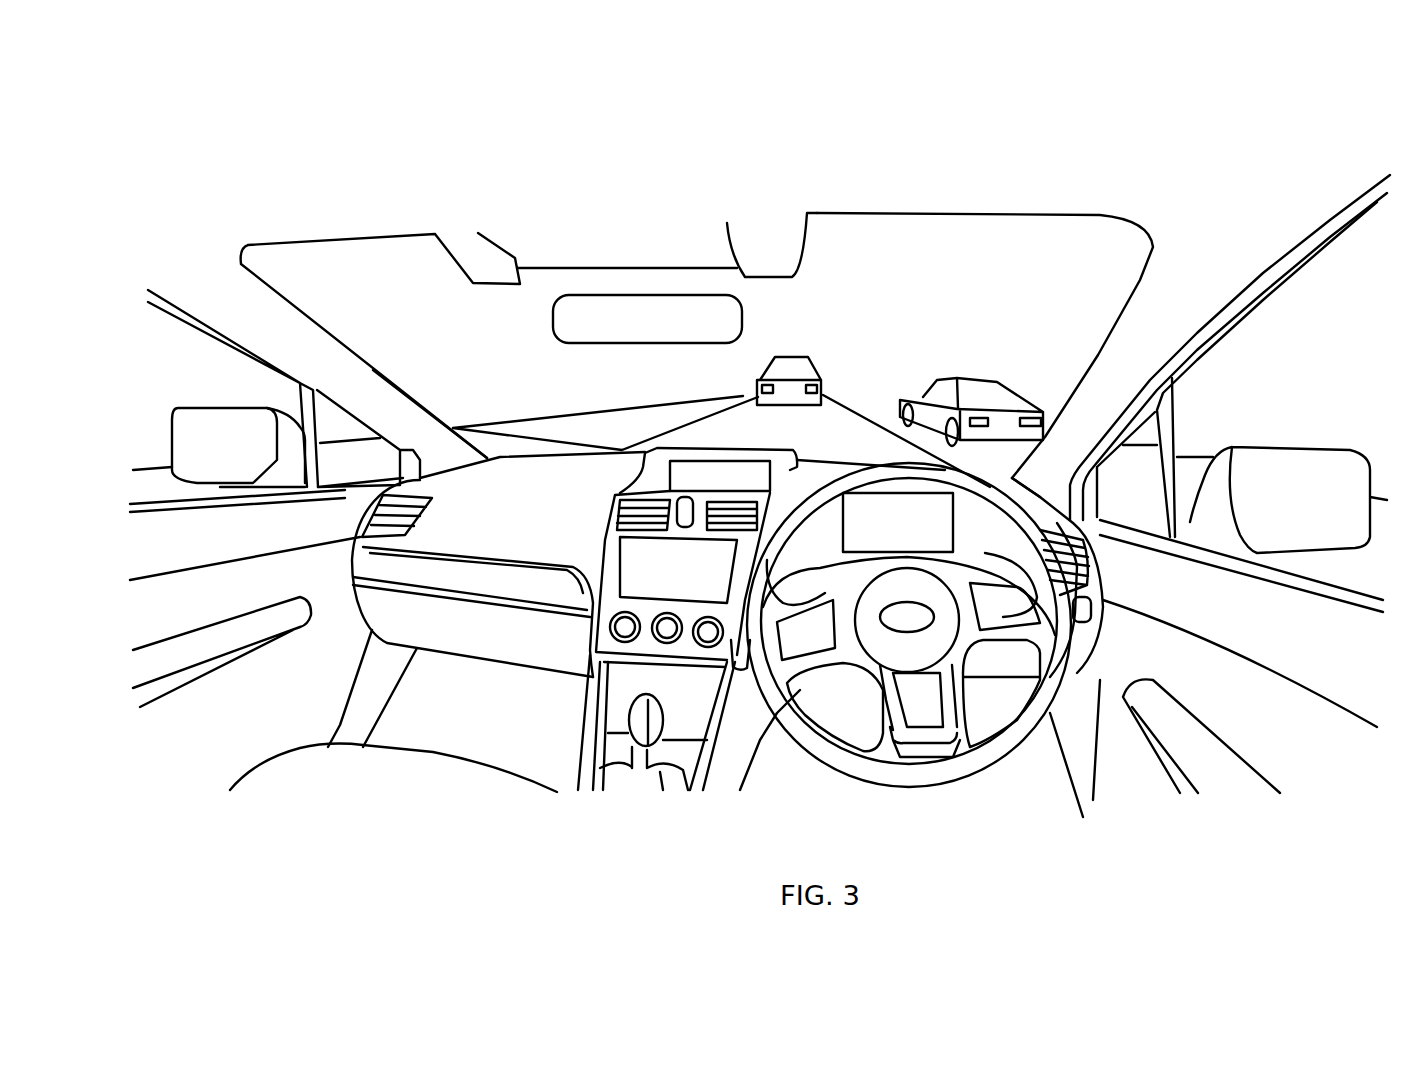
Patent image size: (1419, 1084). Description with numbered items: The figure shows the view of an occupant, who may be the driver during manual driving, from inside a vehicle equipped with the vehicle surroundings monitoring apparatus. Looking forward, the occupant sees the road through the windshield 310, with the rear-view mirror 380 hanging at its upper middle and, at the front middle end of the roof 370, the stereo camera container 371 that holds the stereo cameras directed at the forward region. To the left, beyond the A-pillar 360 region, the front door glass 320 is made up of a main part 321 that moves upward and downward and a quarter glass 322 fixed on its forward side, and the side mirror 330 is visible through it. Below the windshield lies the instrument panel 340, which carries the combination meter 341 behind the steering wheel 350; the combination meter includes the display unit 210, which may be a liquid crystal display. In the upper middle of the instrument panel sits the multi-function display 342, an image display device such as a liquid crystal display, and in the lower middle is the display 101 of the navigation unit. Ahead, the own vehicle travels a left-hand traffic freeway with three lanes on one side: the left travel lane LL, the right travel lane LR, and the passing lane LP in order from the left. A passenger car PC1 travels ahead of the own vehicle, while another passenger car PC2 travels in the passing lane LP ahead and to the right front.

The display 101 is at (655, 597).
The display unit 210 is at (858, 552).
The windshield 310 is at (421, 301).
The front door glass 320 is at (239, 342).
The main part 321 is at (163, 335).
The quarter glass 322 is at (350, 452).
The side mirror 330 is at (218, 488).
The instrument panel 340 is at (479, 525).
The combination meter 341 is at (977, 561).
The multi-function display 342 is at (680, 459).
The steering wheel 350 is at (1007, 757).
The A-pillar 360 is at (1133, 336).
The roof 370 is at (944, 196).
The stereo camera container 371 is at (805, 233).
The rear-view mirror 380 is at (702, 292).
The left travel lane LL is at (555, 425).
The right travel lane LR is at (830, 425).
The passing lane LP is at (1023, 453).
The passenger car PC1 is at (812, 363).
The passenger car PC2 is at (1003, 384).